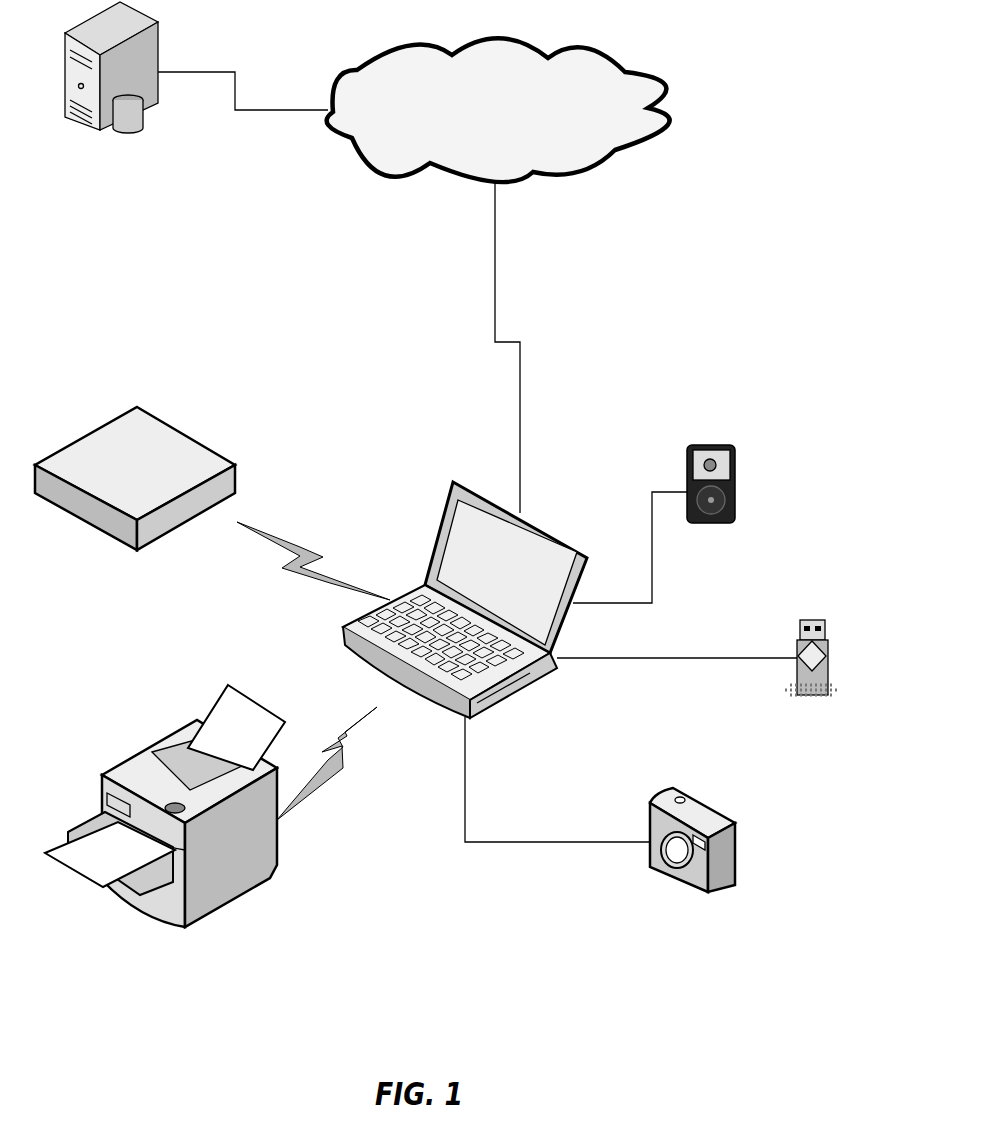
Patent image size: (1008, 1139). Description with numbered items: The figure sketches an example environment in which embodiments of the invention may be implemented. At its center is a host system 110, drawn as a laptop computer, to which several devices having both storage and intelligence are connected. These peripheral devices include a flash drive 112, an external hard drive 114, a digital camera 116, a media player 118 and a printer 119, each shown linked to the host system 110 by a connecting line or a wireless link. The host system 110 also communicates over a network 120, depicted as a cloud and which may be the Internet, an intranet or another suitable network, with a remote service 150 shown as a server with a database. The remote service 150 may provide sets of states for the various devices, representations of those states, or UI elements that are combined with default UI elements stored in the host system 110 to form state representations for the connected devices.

The remote service 150 is at (111, 83).
The network 120 is at (521, 123).
The host system 110 is at (347, 632).
The external hard drive 114 is at (100, 530).
The printer 119 is at (278, 845).
The media player 118 is at (735, 487).
The flash drive 112 is at (827, 653).
The digital camera 116 is at (693, 792).